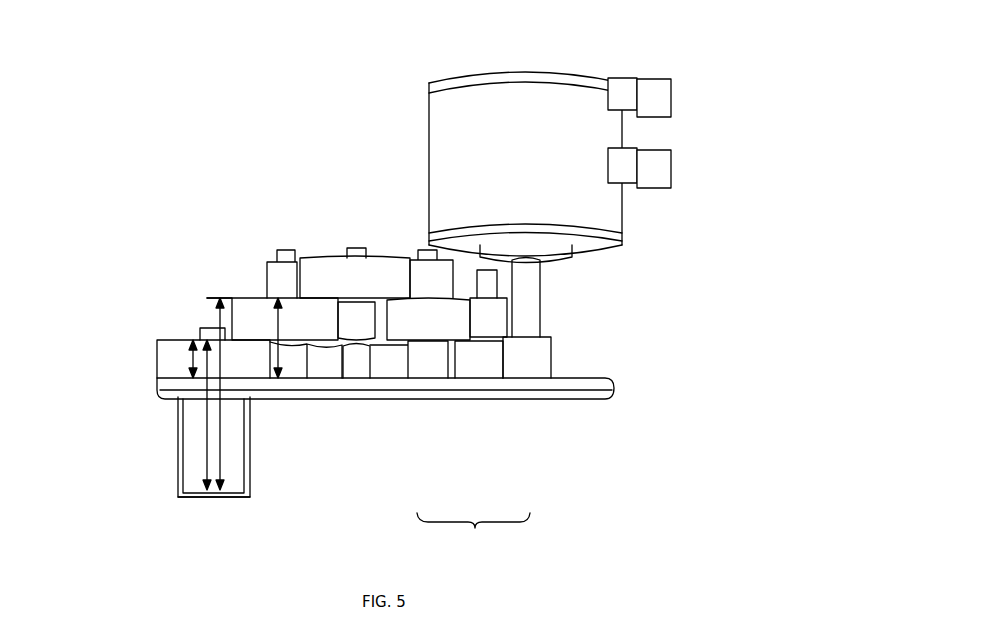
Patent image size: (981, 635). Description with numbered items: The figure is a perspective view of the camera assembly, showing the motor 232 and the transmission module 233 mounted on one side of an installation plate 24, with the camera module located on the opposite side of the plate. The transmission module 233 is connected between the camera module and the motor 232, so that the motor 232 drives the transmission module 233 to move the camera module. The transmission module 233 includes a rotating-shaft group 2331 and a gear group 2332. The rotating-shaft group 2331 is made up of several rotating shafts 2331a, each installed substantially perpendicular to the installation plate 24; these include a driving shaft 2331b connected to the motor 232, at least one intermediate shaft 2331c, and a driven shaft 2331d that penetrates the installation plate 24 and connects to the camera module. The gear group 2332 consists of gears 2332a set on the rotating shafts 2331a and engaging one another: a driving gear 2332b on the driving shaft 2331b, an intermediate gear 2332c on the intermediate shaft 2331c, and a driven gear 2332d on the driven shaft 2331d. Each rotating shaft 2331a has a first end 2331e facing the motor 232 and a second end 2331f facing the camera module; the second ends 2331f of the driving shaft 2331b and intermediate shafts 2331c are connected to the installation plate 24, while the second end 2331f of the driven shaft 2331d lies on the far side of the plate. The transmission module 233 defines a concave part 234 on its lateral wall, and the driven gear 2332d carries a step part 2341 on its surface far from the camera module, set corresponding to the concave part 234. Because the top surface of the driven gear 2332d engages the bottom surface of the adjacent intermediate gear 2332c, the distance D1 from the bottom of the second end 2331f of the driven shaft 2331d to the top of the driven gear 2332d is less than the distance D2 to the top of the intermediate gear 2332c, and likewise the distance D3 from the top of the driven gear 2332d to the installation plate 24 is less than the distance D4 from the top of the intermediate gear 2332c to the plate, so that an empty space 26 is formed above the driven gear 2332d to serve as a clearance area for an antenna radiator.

The motor 232 is at (520, 98).
The installation plate 24 is at (366, 385).
The empty space 26 is at (185, 288).
The transmission module 233 is at (473, 537).
The concave part 234 is at (183, 329).
The step part 2341 is at (175, 333).
The rotating-shaft group 2331 is at (363, 360).
The rotating shaft 2331a is at (357, 248).
The driving shaft 2331b is at (530, 288).
The intermediate shaft 2331c is at (285, 250).
The driven shaft 2331d is at (198, 447).
The first end 2331e is at (203, 328).
The second end 2331f is at (195, 498).
The gear group 2332 is at (438, 325).
The gear 2332a is at (458, 309).
The driving gear 2332b is at (540, 353).
The intermediate gear 2332c is at (318, 318).
The driven gear 2332d is at (245, 365).
The distance D1 is at (198, 415).
The distance D2 is at (229, 394).
The distance D3 is at (181, 359).
The distance D4 is at (289, 338).